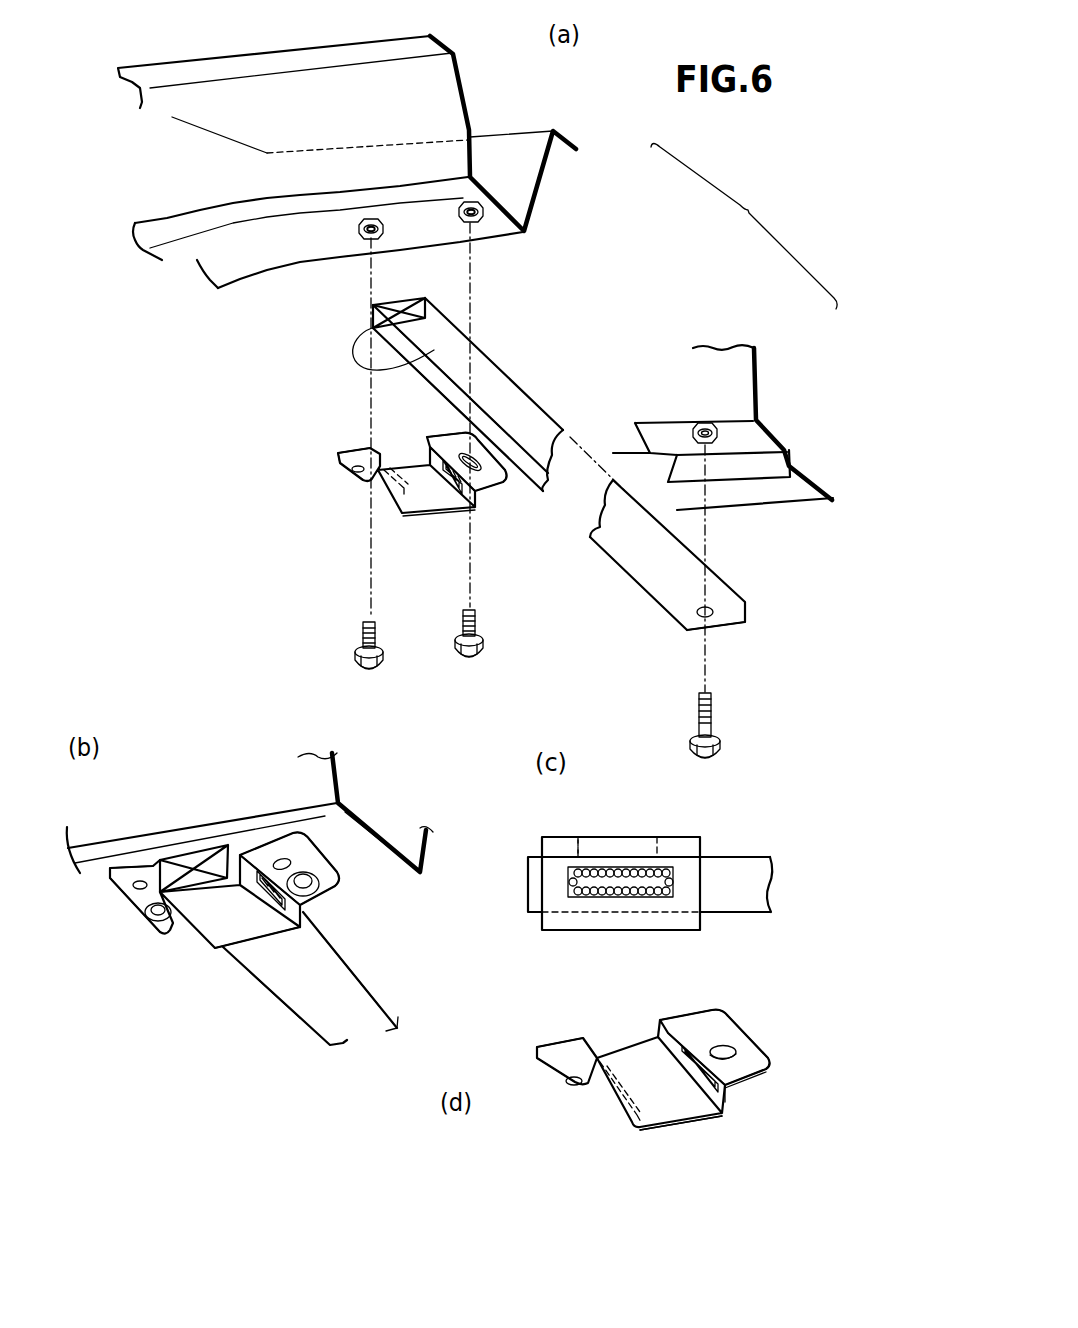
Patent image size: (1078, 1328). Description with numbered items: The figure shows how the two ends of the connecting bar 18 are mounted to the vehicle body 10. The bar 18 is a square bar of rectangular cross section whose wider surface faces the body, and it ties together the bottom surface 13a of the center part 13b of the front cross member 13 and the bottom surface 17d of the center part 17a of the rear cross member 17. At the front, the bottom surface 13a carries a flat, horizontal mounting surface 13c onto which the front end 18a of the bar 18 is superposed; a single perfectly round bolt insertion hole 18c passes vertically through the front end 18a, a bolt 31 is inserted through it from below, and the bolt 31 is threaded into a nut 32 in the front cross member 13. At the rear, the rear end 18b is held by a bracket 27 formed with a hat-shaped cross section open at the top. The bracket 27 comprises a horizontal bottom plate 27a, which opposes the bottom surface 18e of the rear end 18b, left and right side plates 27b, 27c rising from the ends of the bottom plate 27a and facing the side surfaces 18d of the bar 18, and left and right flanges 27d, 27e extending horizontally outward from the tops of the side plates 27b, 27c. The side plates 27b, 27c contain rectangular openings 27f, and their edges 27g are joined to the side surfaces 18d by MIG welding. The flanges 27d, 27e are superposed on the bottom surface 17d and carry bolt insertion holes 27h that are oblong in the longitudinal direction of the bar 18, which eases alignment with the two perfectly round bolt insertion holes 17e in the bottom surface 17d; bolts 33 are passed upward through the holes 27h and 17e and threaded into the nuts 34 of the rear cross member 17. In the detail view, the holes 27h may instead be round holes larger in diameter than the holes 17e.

The vehicle body 10 is at (744, 227).
The front cross member 13 is at (757, 353).
The bottom surface of front cross member 13a is at (783, 498).
The center part of front cross member 13b is at (753, 497).
The mounting surface 13c is at (746, 435).
The rear cross member 17 is at (548, 188).
The center part of rear cross member 17a is at (223, 261).
The bottom surface of rear cross member 17d is at (316, 236).
The bolt insertion holes of rear cross member 17e is at (381, 236).
The connecting bar 18 is at (565, 428).
The front end of bar 18a is at (724, 620).
The rear end of bar 18b is at (461, 392).
The bolt insertion hole of bar 18c is at (710, 620).
The side surfaces of bar 18d is at (431, 317).
The bottom surface of bar 18e is at (428, 354).
The bracket 27 is at (346, 448).
The bottom plate 27a is at (432, 504).
The left side plate 27b is at (366, 480).
The right side plate 27c is at (450, 490).
The left flange 27d is at (342, 452).
The right flange 27e is at (500, 484).
The rectangular openings 27f is at (390, 482).
The edges of openings 27g is at (440, 468).
The bolt insertion holes of flanges 27h is at (352, 468).
The bolt 31 is at (709, 727).
The nut 32 is at (716, 426).
The bolts 33 is at (460, 627).
The nuts 34 is at (382, 218).